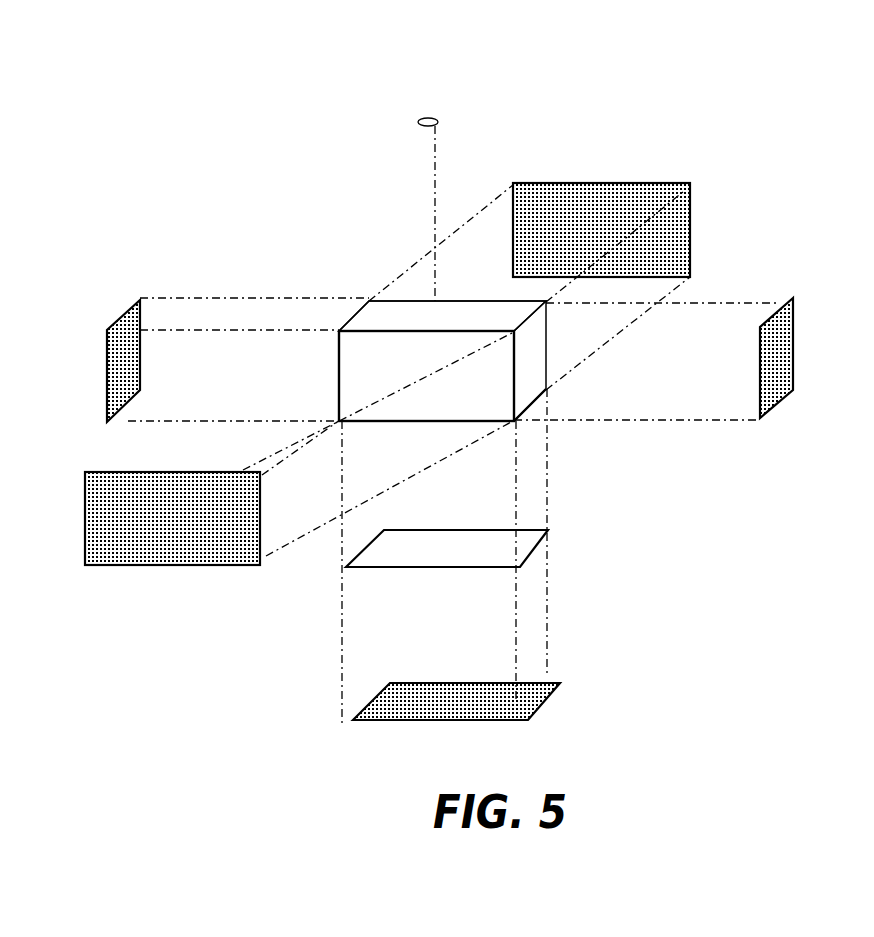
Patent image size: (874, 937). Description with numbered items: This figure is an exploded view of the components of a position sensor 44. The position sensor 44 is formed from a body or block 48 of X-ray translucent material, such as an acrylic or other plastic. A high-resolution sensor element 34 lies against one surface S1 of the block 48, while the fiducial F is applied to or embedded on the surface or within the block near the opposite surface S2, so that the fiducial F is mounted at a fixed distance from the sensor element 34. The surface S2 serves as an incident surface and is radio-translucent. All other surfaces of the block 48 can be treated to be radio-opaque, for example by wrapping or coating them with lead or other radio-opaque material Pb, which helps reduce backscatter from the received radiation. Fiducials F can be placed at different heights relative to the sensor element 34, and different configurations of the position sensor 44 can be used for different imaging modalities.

The position sensor 44 is at (181, 110).
The fiducial F is at (437, 121).
The block 48 is at (399, 378).
The incident surface S2 is at (363, 303).
The surface S1 is at (466, 422).
The radio-opaque material Pb is at (108, 381).
The sensor element 34 is at (540, 553).